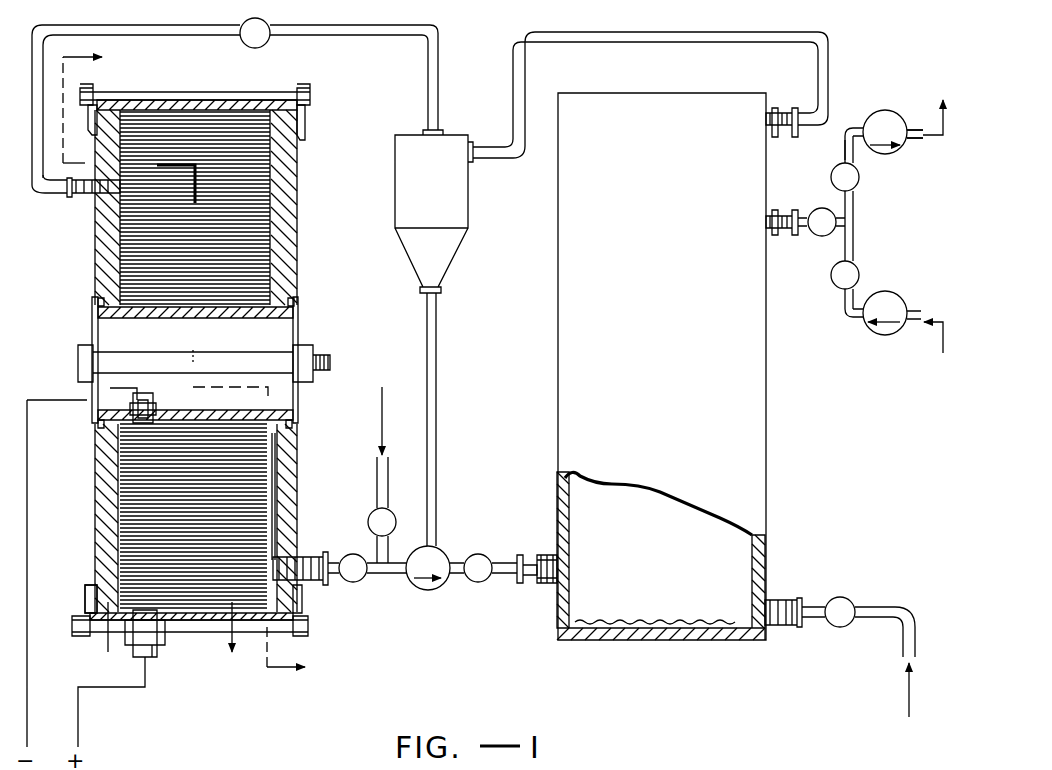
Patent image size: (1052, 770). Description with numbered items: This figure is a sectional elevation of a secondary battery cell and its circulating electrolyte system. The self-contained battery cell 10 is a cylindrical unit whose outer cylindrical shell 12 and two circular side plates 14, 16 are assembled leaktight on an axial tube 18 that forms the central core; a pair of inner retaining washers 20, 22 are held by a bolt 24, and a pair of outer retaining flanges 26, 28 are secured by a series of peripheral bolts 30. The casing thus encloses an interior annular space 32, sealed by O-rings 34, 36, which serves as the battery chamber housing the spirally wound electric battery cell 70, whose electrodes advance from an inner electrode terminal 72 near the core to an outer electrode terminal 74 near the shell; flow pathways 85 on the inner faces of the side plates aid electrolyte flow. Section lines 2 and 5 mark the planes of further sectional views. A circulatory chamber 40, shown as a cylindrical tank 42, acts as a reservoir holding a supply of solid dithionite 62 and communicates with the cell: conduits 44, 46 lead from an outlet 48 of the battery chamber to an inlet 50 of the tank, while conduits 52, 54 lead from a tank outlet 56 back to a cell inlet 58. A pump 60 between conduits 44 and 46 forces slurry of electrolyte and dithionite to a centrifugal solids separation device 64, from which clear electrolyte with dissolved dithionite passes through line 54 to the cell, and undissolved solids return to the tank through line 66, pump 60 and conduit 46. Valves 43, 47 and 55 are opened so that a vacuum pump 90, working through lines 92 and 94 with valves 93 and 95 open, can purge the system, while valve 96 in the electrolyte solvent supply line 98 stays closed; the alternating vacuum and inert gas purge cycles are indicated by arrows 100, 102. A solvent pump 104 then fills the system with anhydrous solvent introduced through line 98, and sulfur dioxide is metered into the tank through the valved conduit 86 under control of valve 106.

The section line 2- 2 is at (194, 363).
The section line 5- 5 is at (169, 642).
The battery cell 10 is at (186, 86).
The outer cylindrical shell 12 is at (156, 99).
The side plate 14 is at (100, 250).
The side plate 16 is at (290, 228).
The axial tube 18 is at (213, 318).
The inner circular retaining washer 20 is at (92, 322).
The inner circular retaining washer 22 is at (298, 324).
The bolt 24 is at (158, 358).
The outer circular retaining flange 26 is at (85, 592).
The outer circular retaining flange 28 is at (302, 600).
The bolts 30 is at (246, 96).
The interior annular space 32 is at (272, 180).
The O-ring 34 is at (300, 124).
The O-ring 36 is at (298, 300).
The circulatory chamber 40 is at (688, 78).
The cylindrical tank 42 is at (752, 440).
The valve 43 is at (360, 583).
The conduit 44 is at (400, 575).
The conduit 46 is at (458, 560).
The valve 47 is at (480, 583).
The outlet 48 is at (316, 556).
The inlet 50 is at (546, 555).
The conduit 52 is at (600, 43).
The conduit 54 is at (355, 42).
The valve 55 is at (270, 42).
The outlet 56 is at (788, 137).
The inlet 58 is at (82, 198).
The pump 60 is at (438, 547).
The solid dithionite 62 is at (645, 620).
The solids separation device 64 is at (455, 255).
The line 66 is at (437, 425).
The electric battery cell 70 is at (252, 470).
The inner electrode terminal 72 is at (189, 386).
The outer electrode terminal 74 is at (150, 660).
The flow pathways 85 is at (280, 505).
The valved conduit 86 is at (878, 606).
The vacuum pump 90 is at (888, 110).
The line 92 is at (848, 130).
The valve 93 is at (860, 184).
The line 94 is at (788, 236).
The valve 95 is at (824, 208).
The valve 96 is at (858, 268).
The electrolyte solvent supply line 98 is at (372, 482).
The arrow 100 is at (372, 406).
The arrow 102 is at (938, 140).
The solvent pump 104 is at (885, 336).
The valve 106 is at (848, 598).